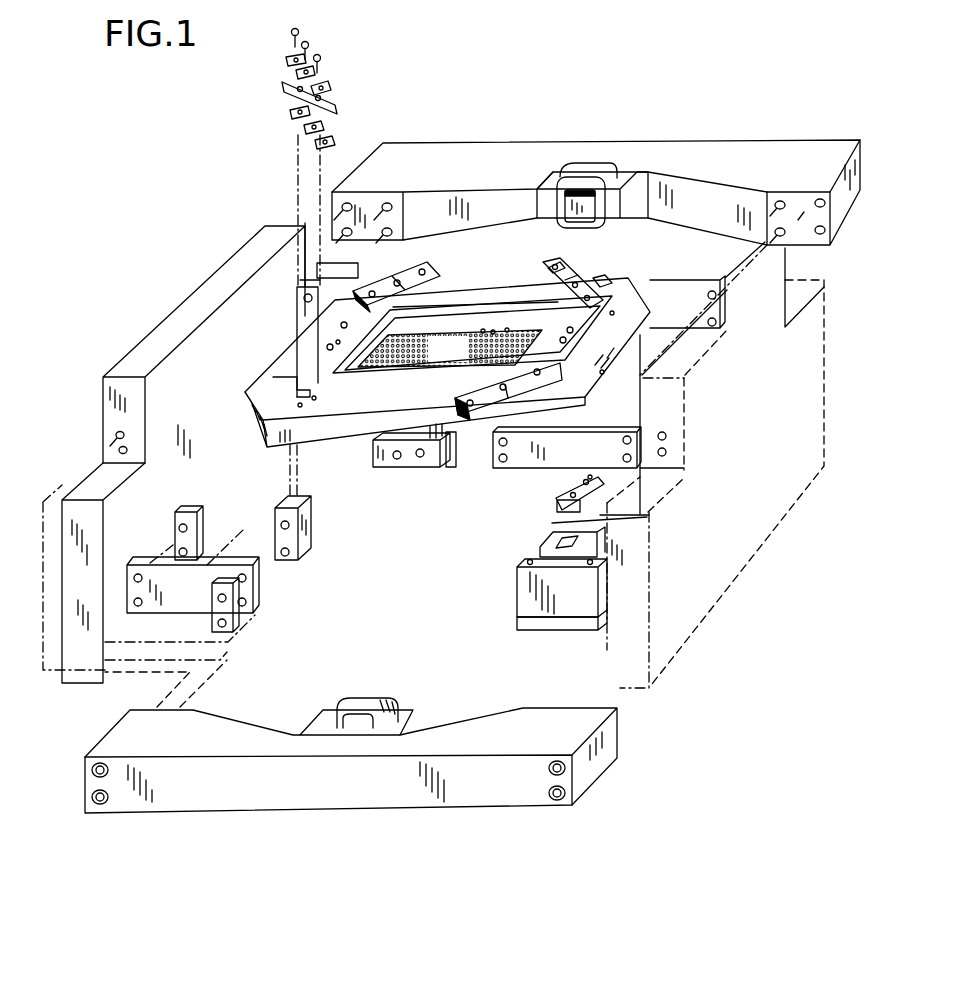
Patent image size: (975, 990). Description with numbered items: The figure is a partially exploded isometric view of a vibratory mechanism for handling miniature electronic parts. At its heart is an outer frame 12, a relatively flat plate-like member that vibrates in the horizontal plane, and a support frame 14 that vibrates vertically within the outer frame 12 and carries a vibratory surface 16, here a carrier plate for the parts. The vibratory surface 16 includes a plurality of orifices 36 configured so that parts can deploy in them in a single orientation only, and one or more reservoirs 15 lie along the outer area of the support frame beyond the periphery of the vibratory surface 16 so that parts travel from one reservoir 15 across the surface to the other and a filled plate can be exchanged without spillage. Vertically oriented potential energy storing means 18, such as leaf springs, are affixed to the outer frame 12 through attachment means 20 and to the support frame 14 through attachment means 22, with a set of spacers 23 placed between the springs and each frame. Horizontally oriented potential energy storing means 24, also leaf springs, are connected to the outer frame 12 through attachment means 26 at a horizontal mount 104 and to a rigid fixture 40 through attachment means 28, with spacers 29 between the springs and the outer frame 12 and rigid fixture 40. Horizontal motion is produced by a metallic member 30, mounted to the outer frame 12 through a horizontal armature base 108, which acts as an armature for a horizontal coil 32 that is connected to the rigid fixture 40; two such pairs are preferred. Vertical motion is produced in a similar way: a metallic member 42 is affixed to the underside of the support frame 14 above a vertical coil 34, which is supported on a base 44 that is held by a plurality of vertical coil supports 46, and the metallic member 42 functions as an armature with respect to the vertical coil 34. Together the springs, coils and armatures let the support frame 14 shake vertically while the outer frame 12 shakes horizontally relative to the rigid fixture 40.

The outer frame 12 is at (267, 400).
The support frame 14 is at (328, 347).
The reservoir 15 is at (457, 317).
The vibratory surface 16 is at (464, 361).
The vertically oriented potential energy storing means 18 is at (333, 107).
The attachment means 20 is at (560, 262).
The attachment means 22 is at (597, 280).
The spacers 23 is at (323, 82).
The horizontally oriented potential energy storing means 24 is at (260, 588).
The attachment means 26 is at (200, 545).
The attachment means 28 is at (180, 528).
The spacers 29 is at (180, 551).
The metallic member 30 is at (410, 460).
The horizontal coil 32 is at (591, 165).
The vertical coil 34 is at (590, 540).
The orifice 36 is at (507, 330).
The rigid fixture 40 is at (778, 172).
The metallic member 42 is at (553, 513).
The base 44 is at (607, 592).
The vertical coil supports 46 is at (630, 547).
The horizontal mount 104 is at (300, 552).
The horizontal armature base 108 is at (455, 450).